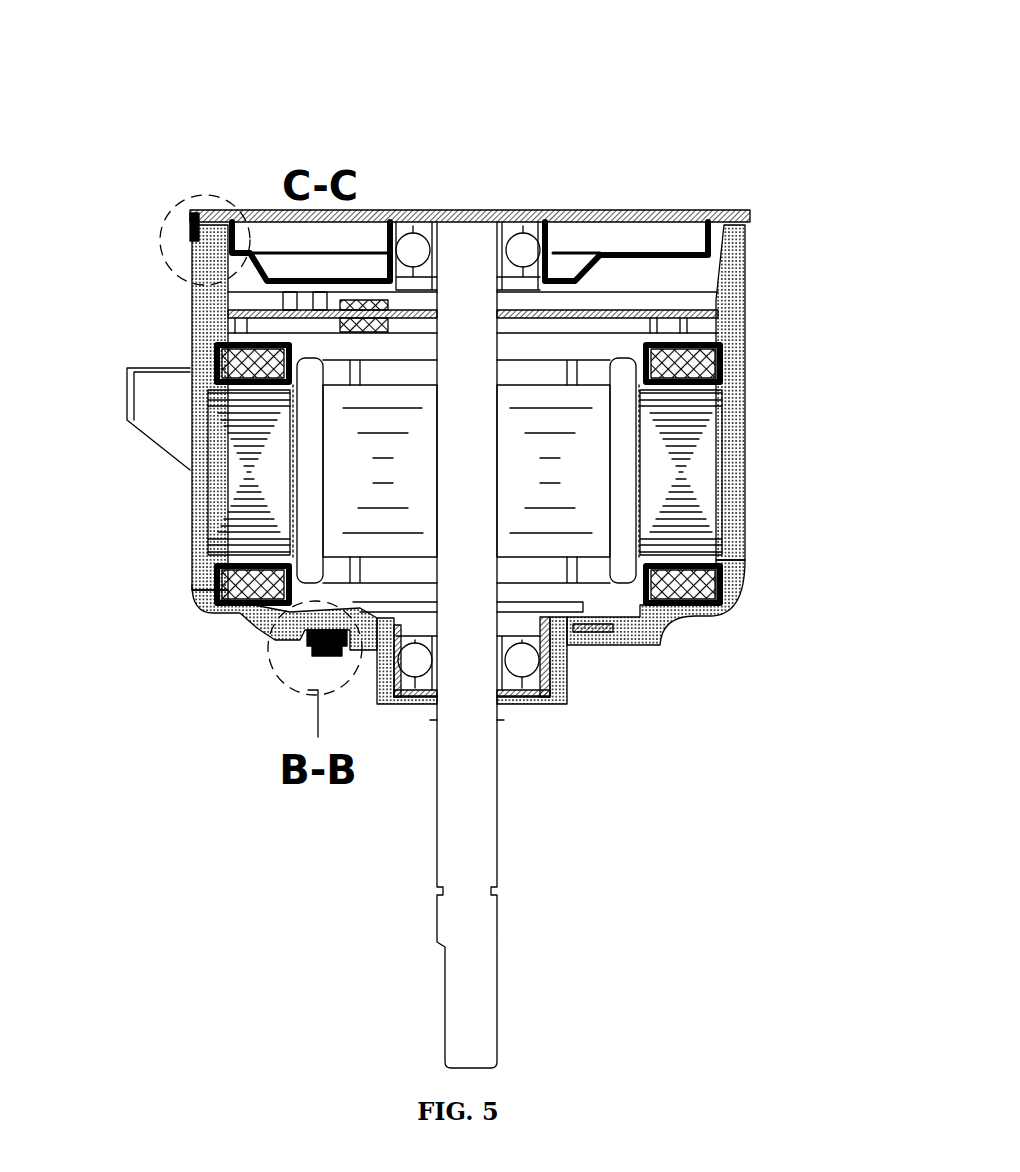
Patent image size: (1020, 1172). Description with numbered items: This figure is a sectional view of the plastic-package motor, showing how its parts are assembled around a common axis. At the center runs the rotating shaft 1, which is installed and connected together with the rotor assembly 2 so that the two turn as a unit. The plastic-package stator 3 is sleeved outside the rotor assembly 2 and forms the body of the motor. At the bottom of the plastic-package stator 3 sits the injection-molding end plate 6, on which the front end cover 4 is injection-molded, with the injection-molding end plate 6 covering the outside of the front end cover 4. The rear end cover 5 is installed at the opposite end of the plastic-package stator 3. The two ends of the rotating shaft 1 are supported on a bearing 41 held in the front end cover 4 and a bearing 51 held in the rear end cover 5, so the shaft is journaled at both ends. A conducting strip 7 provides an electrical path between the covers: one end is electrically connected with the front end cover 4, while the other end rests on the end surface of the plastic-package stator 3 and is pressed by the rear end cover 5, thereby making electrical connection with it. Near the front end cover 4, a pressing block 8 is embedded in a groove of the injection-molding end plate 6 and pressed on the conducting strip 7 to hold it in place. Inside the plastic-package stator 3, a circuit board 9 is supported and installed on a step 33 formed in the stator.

The rotating shaft 1 is at (469, 764).
The rotor assembly 2 is at (727, 604).
The plastic-package stator 3 is at (682, 465).
The front end cover 4 is at (190, 562).
The bearing 41 is at (417, 702).
The rear end cover 5 is at (462, 210).
The bearing 51 is at (535, 212).
The injection-molding end plate 6 is at (573, 652).
The conducting strip 7 is at (262, 635).
The pressing block 8 is at (324, 655).
The circuit board 9 is at (622, 300).
The step 33 is at (743, 298).